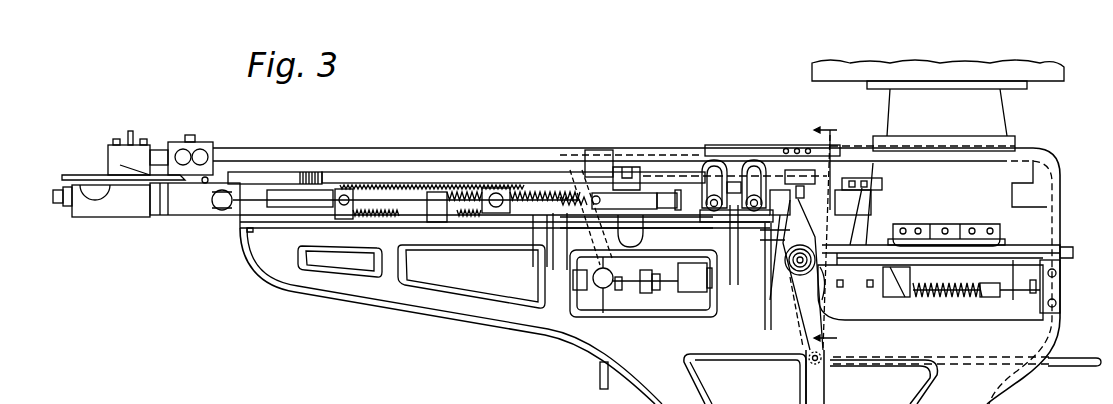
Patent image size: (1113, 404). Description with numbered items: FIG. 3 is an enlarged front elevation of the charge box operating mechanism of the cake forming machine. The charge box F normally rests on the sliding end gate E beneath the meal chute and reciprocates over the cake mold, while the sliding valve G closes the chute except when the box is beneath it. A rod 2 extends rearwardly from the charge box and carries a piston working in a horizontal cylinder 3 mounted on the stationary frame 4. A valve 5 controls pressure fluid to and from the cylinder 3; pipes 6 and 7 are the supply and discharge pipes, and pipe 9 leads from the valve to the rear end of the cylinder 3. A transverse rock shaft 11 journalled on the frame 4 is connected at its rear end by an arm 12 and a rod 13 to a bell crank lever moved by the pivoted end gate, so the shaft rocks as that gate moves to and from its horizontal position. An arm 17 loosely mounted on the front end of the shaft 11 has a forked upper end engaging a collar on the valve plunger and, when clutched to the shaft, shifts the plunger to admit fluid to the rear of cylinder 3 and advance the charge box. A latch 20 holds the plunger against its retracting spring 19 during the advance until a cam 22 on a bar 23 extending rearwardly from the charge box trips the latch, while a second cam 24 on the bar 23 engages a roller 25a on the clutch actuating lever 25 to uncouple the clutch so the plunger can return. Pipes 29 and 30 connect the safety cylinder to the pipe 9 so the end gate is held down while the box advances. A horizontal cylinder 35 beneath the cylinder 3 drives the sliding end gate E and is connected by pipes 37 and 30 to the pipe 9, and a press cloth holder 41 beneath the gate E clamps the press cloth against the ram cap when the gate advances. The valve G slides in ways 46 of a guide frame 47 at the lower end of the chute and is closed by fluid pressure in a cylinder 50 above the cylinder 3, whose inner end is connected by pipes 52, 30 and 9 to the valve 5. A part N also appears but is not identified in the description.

The rod 2 is at (845, 202).
The charge box cylinder 3 is at (197, 206).
The stationary frame 4 is at (480, 317).
The valve 5 is at (737, 203).
The supply pipe 6 is at (753, 176).
The discharge pipe 7 is at (713, 174).
The pipe 9 is at (300, 208).
The transverse rock shaft 11 is at (824, 232).
The arm 12 is at (798, 335).
The rod 13 is at (915, 368).
The arm 17 is at (783, 267).
The retracting spring 19 is at (527, 196).
The latch 20 is at (637, 176).
The cam 22 is at (130, 180).
The bar 23 is at (380, 177).
The second cam 24 is at (277, 177).
The clutch actuating lever 25 is at (793, 277).
The roller 25a is at (805, 190).
The pipe 29 is at (600, 372).
The pipe 30 is at (563, 277).
The horizontal cylinder 35 is at (717, 294).
The pipe 37 is at (663, 287).
The press cloth holder 41 is at (1033, 300).
The ways 46 is at (963, 139).
The guide frame 47 is at (1054, 198).
The cylinder 50 is at (613, 167).
The pipe 52 is at (575, 167).
The sliding end gate E is at (1067, 247).
The charge box F is at (947, 209).
The sliding valve G is at (737, 145).
The lever N is at (804, 274).